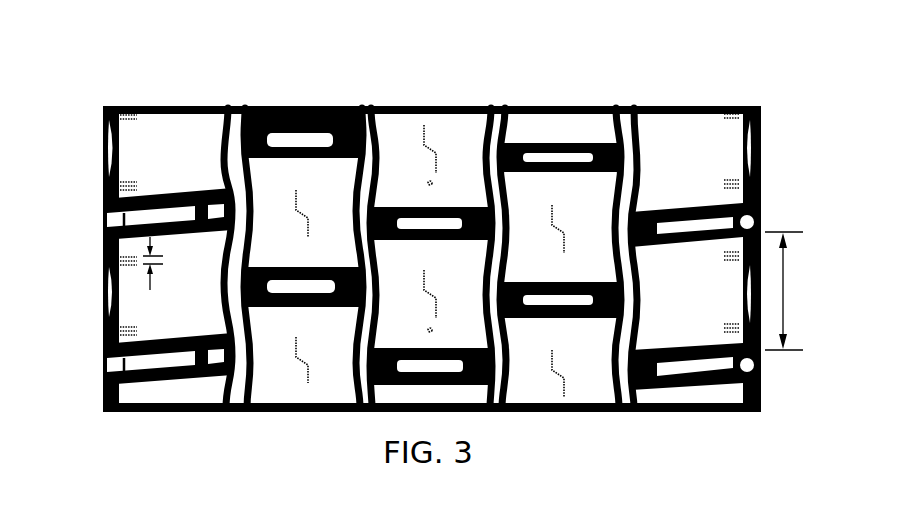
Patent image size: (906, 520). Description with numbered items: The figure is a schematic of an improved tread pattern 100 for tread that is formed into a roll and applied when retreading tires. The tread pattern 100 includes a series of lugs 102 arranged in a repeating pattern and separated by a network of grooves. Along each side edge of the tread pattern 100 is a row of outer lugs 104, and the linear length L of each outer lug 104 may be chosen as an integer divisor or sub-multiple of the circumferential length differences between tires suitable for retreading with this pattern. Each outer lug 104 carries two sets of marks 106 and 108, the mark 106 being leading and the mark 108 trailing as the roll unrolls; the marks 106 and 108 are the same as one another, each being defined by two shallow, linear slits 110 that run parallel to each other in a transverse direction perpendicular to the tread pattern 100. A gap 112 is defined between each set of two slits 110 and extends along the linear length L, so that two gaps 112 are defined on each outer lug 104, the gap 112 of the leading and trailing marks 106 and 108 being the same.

The tread pattern 100 is at (414, 249).
The lug 102 is at (433, 124).
The outer lug 104 is at (192, 96).
The mark 106 is at (88, 243).
The mark 108 is at (86, 335).
The slit 110 is at (133, 327).
The gap 112 is at (138, 232).